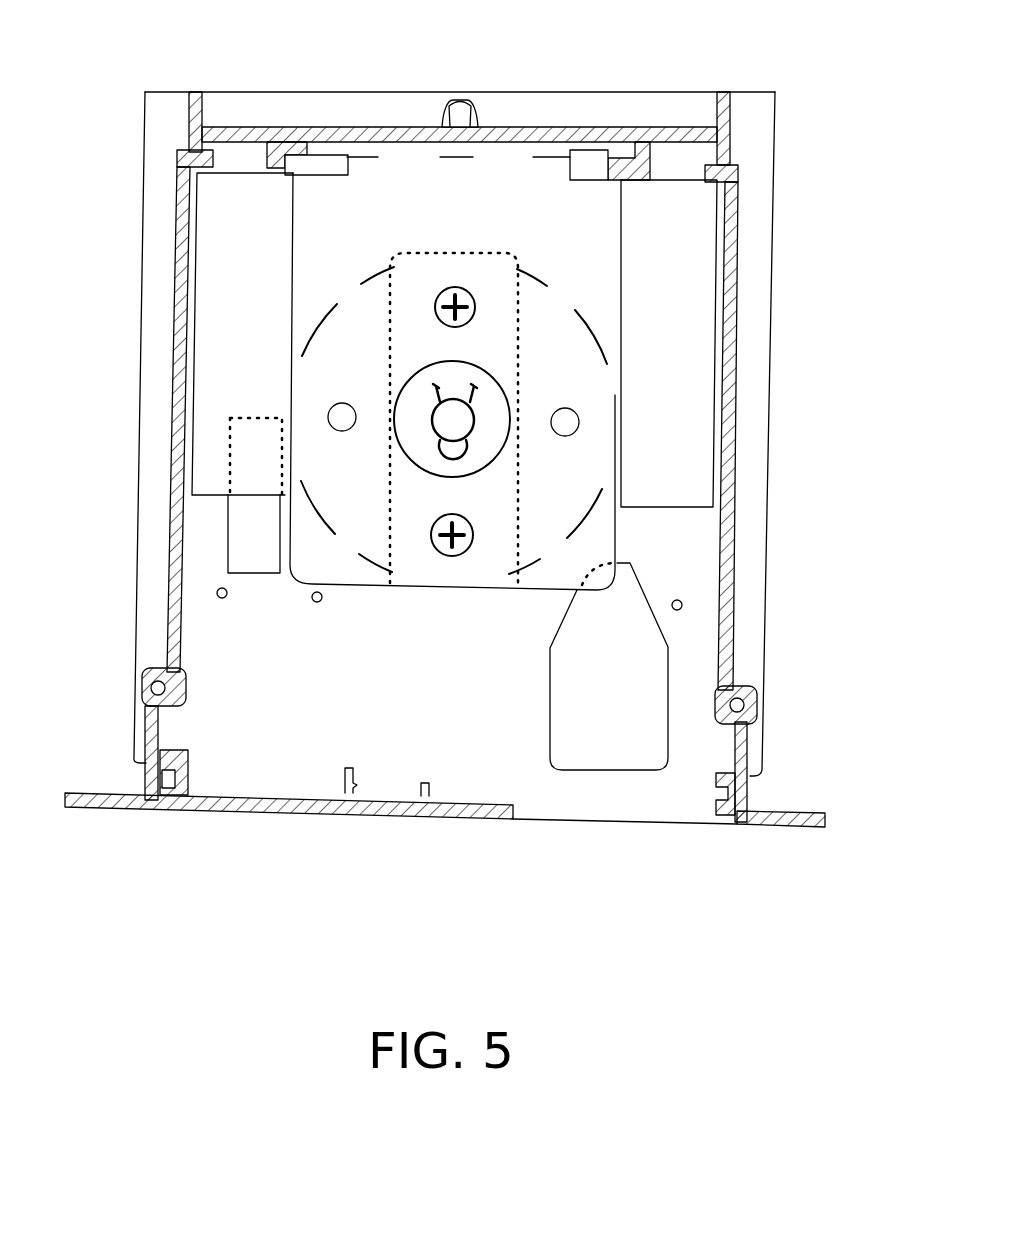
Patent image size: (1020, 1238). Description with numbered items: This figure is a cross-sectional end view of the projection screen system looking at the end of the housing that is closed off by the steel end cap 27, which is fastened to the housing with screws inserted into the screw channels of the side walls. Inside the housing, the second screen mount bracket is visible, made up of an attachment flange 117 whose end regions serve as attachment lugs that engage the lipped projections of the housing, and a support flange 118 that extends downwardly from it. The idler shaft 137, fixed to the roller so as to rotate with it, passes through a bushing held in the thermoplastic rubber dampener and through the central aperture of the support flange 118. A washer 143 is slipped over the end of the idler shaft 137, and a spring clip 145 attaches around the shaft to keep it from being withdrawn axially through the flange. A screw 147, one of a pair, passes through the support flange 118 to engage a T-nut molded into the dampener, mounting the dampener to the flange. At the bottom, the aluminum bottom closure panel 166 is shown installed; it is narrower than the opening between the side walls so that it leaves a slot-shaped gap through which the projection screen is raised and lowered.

The end cap 27 is at (673, 120).
The attachment flange 117 is at (497, 157).
The support flange 118 is at (577, 220).
The idler shaft 137 is at (475, 417).
The washer 143 is at (510, 400).
The spring clip 145 is at (470, 448).
The screw 147 is at (443, 293).
The bottom closure panel 166 is at (288, 820).